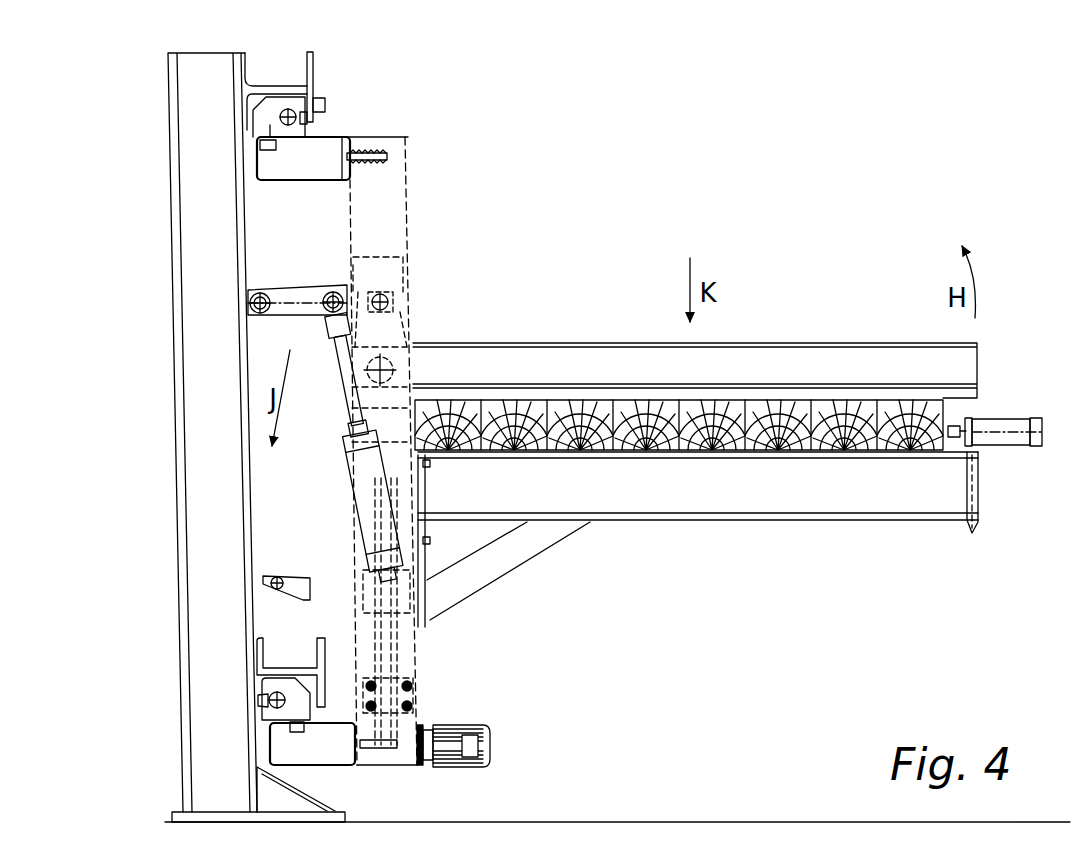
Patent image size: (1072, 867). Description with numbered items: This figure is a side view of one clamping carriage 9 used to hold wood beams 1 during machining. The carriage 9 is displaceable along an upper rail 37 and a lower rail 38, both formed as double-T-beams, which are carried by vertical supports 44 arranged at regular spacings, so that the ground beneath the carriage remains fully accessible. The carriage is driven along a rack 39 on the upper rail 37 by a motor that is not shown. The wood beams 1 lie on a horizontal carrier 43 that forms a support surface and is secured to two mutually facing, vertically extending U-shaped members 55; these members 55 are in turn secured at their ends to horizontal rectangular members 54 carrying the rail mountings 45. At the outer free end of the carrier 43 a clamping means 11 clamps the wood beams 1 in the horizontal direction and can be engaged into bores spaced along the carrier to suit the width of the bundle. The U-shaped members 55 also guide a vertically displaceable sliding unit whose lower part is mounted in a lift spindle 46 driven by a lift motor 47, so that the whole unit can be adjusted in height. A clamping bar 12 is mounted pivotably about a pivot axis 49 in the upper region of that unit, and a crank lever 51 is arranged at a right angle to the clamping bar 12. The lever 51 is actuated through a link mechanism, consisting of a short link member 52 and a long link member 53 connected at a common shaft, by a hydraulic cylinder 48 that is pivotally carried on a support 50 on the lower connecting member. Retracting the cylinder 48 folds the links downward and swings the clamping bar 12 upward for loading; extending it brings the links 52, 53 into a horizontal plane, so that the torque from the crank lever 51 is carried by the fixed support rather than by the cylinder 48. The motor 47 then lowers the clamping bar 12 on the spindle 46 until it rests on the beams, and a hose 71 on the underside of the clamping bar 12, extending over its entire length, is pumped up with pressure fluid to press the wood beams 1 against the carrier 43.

The wood beams 1 is at (907, 438).
The clamping carriage 9 is at (614, 171).
The clamping means 11 is at (1033, 420).
The clamping beam or bar 12 is at (589, 358).
The upper rail 37 is at (313, 70).
The lower rail 38 is at (320, 657).
The rack 39 is at (325, 104).
The horizontal carrier 43 is at (640, 493).
The vertical supports 44 is at (200, 283).
The rail mountings 45 is at (307, 118).
The lift spindle 46 is at (392, 647).
The lift motor 47 is at (487, 742).
The hydraulic cylinder 48 is at (287, 490).
The pivot axis 49 is at (366, 373).
The support 50 is at (273, 585).
The crank lever 51 is at (383, 323).
The short link member 52 is at (350, 288).
The long link member 53 is at (303, 296).
The horizontal rectangular members 54 is at (257, 163).
The U-shaped members 55 is at (375, 218).
The hose 71 is at (808, 395).